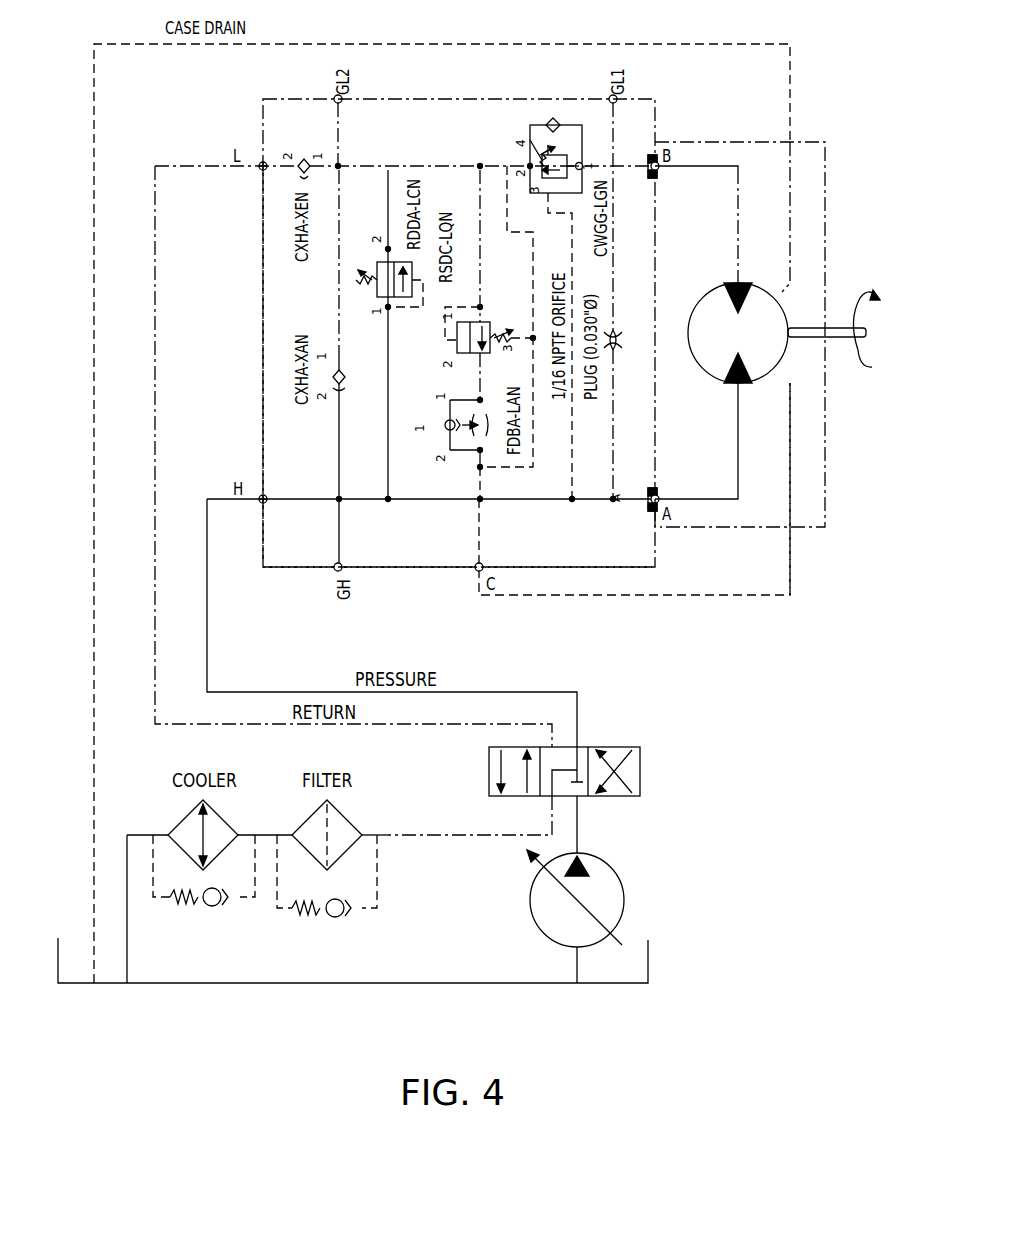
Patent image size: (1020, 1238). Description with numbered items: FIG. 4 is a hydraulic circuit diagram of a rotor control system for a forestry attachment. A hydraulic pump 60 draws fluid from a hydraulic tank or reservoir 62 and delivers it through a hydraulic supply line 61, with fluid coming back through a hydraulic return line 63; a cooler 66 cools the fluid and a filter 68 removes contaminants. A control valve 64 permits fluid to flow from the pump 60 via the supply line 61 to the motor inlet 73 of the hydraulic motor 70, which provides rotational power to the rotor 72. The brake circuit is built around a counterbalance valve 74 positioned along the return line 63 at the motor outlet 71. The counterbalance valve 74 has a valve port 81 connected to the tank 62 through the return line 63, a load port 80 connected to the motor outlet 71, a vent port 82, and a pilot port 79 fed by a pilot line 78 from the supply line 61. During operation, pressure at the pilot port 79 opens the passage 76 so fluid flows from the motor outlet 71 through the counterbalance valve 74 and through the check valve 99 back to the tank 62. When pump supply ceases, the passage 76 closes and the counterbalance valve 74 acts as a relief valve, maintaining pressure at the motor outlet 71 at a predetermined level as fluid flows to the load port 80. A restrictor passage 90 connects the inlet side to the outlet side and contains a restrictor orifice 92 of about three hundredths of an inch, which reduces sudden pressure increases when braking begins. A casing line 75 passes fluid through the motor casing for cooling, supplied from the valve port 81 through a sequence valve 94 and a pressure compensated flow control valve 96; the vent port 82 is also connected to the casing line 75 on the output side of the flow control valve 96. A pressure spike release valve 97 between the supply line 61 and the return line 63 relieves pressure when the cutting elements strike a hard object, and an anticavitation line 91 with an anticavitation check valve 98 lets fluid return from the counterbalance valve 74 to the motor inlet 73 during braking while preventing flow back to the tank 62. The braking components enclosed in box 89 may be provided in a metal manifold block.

The hydraulic pump 60 is at (614, 882).
The hydraulic supply line 61 is at (530, 692).
The hydraulic tank or reservoir 62 is at (506, 983).
The hydraulic return line 63 is at (155, 390).
The control valve 64 is at (527, 796).
The cooler 66 is at (222, 822).
The filter 68 is at (345, 822).
The hydraulic motor 70 is at (779, 305).
The motor outlet 71 is at (737, 287).
The rotor 72 is at (833, 338).
The motor inlet 73 is at (737, 385).
The counterbalance valve 74 is at (585, 133).
The casing line 75 is at (790, 443).
The passage 76 is at (548, 160).
The pilot line 78 is at (572, 470).
The pilot port 79 is at (525, 172).
The load port 80 is at (582, 168).
The valve port 81 is at (530, 165).
The vent port 82 is at (540, 125).
The box 89 is at (296, 568).
The restrictor passage or line 90 is at (634, 275).
The anticavitation line or passage 91 is at (339, 307).
The restrictor orifice 92 is at (618, 348).
The sequence valve 94 is at (480, 322).
The pressure compensated flow control valve 96 is at (450, 400).
The pressure spike release valve 97 is at (375, 250).
The anticavitation check valve 98 is at (345, 380).
The check valve 99 is at (304, 158).